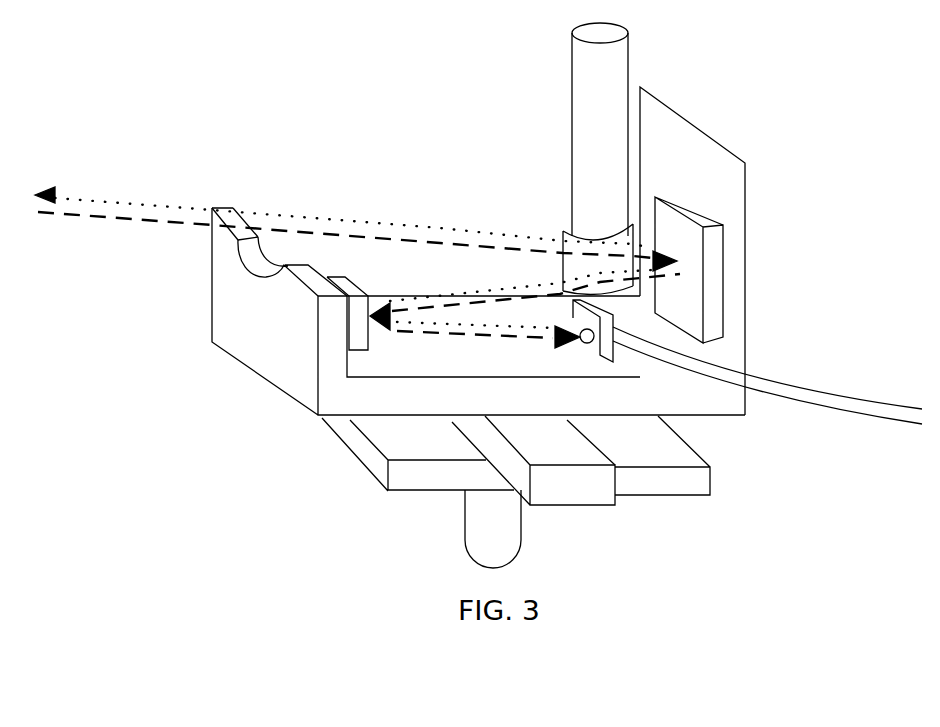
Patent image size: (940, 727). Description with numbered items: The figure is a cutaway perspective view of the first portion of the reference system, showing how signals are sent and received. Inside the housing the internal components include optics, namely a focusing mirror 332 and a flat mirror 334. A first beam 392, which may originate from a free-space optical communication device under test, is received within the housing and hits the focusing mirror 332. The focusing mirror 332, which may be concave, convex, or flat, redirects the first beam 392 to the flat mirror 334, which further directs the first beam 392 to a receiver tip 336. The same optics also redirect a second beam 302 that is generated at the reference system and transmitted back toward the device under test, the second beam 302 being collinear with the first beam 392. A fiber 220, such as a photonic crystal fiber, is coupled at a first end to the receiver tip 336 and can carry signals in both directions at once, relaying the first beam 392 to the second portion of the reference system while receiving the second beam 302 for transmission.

The second beam 302 is at (135, 203).
The first beam 392 is at (158, 225).
The focusing mirror 332 is at (708, 268).
The flat mirror 334 is at (360, 331).
The receiver tip 336 is at (612, 336).
The fiber 220 is at (812, 388).